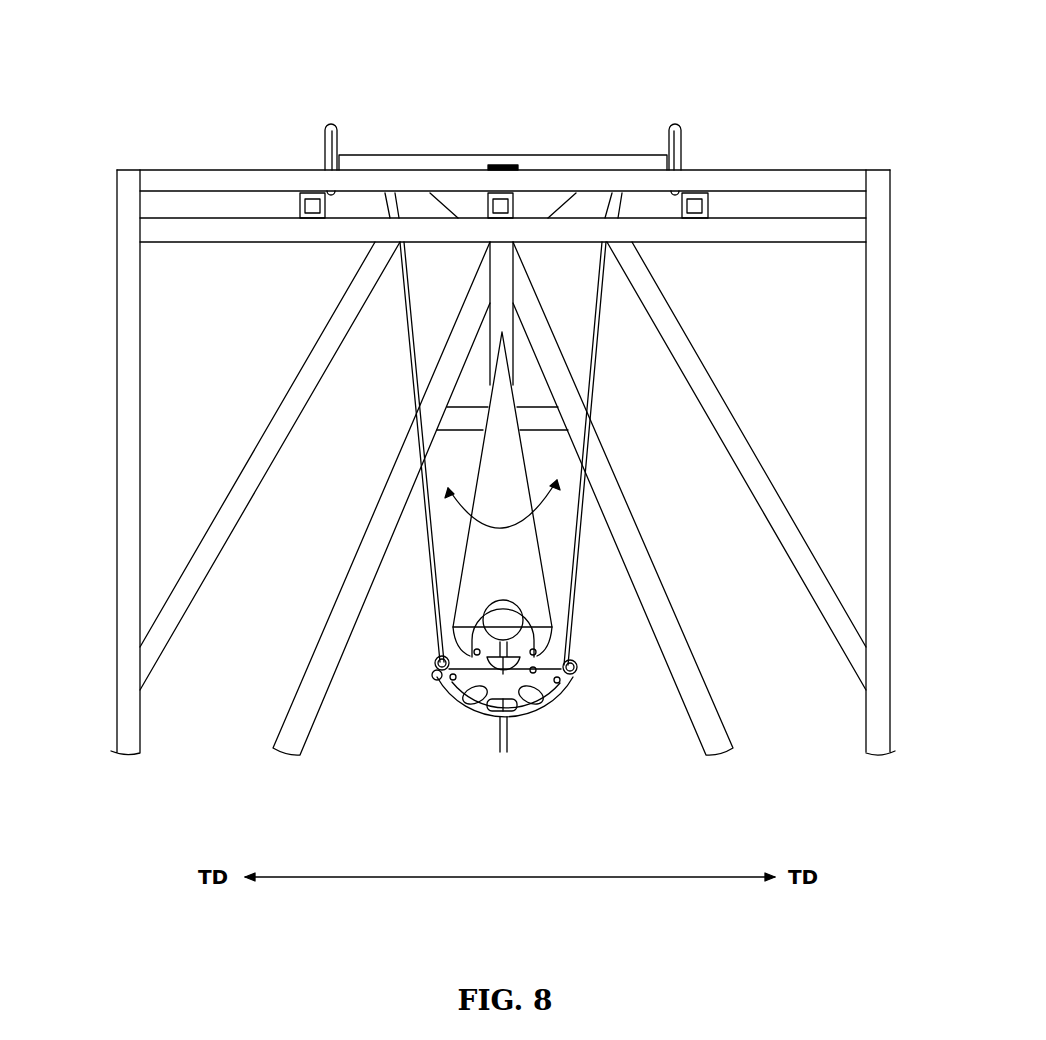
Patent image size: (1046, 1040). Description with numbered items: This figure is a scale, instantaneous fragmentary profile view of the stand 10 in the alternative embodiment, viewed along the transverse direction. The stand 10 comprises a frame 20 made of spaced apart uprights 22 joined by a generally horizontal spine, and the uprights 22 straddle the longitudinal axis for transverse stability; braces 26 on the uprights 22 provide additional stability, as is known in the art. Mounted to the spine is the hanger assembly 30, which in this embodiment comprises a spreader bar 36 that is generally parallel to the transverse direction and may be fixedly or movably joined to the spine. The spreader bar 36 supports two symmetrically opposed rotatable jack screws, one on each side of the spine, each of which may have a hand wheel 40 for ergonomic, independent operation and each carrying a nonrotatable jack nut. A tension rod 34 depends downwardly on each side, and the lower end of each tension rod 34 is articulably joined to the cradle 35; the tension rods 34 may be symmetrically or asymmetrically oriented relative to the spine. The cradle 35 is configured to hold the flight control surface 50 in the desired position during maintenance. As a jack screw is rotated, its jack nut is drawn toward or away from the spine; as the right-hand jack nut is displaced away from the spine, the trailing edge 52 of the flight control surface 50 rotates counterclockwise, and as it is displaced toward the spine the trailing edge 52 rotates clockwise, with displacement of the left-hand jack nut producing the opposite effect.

The stand 10 is at (751, 102).
The frame 20 is at (190, 185).
The uprights 22 is at (122, 519).
The braces 26 is at (207, 549).
The hanger assembly 30 is at (437, 163).
The tension rod 34 is at (403, 378).
The cradle 35 is at (447, 688).
The spreader bar 36 is at (538, 208).
The hand wheel 40 is at (340, 124).
The flight control surface 50 is at (490, 495).
The trailing edge 52 is at (500, 330).